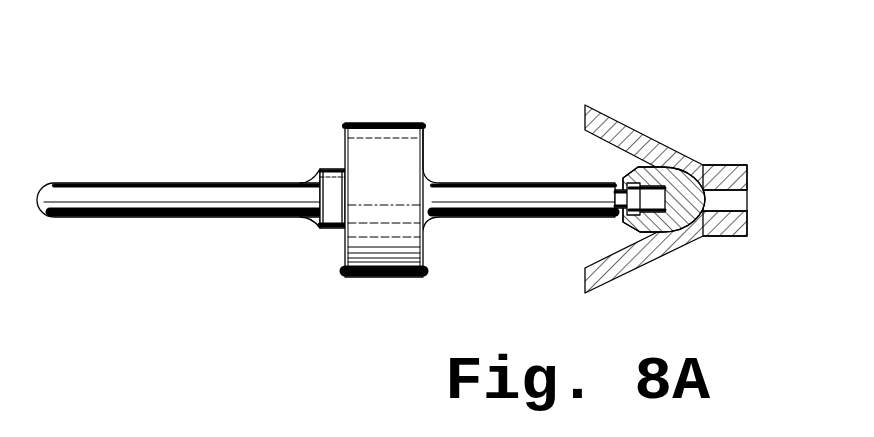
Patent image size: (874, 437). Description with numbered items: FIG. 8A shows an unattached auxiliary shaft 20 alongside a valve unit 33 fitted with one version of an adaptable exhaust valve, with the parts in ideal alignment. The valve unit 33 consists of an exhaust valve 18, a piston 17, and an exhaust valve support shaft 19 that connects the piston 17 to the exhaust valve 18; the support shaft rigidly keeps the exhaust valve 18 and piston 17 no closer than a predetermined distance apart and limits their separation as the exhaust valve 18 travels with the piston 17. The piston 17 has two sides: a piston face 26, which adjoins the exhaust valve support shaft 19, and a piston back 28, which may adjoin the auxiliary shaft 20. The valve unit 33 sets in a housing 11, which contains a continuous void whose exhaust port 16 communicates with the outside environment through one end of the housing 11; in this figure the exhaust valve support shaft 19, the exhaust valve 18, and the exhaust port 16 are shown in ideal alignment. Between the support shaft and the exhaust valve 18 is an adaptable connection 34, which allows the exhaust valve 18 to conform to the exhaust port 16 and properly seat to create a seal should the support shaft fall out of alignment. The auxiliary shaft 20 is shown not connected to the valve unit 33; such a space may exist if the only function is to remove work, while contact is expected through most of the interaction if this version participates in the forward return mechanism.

The housing 11 is at (617, 112).
The exhaust port 16 is at (727, 198).
The piston 17 is at (410, 258).
The exhaust valve 18 is at (677, 185).
The exhaust valve support shaft 19 is at (510, 197).
The auxiliary shaft 20 is at (128, 222).
The piston face 26 is at (423, 140).
The piston back 28 is at (345, 158).
The valve unit 33 is at (380, 284).
The adaptable connection 34 is at (620, 232).